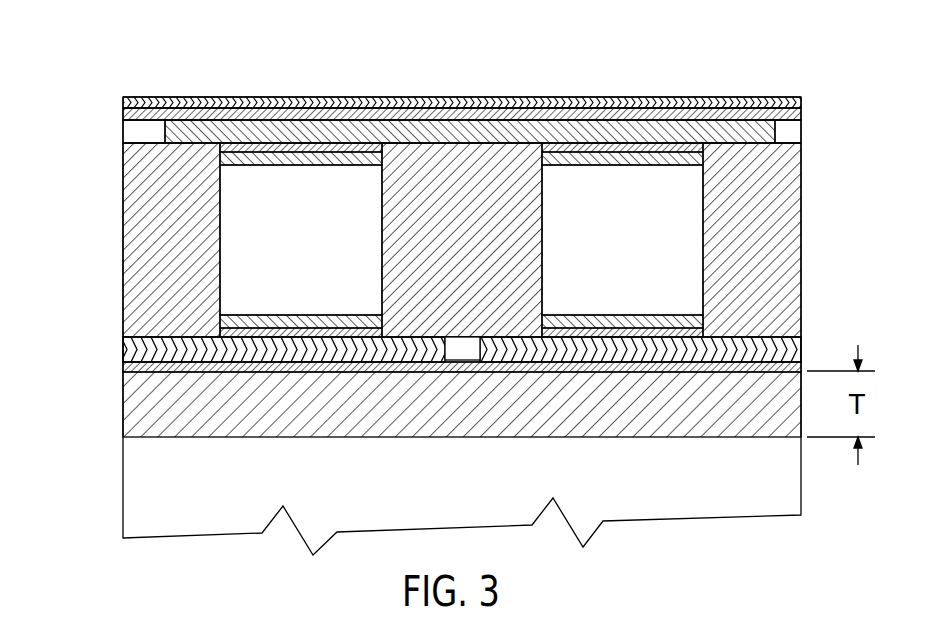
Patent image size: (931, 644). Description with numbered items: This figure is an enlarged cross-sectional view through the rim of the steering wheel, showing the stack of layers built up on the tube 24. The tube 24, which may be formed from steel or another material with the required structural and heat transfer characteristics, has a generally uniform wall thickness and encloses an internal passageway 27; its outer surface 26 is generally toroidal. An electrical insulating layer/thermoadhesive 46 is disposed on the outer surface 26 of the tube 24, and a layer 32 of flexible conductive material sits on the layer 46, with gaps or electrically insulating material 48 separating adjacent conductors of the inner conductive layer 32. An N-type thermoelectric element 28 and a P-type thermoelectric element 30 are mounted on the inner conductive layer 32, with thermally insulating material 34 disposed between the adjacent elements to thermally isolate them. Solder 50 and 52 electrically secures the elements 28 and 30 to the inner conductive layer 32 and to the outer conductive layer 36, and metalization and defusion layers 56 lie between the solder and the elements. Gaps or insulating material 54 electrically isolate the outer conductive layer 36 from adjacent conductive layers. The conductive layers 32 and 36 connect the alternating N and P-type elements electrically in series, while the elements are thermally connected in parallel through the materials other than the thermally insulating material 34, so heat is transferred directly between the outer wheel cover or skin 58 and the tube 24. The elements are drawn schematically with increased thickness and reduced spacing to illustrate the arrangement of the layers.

The tube 24 is at (123, 408).
The cylindrical outer surface 26 is at (140, 360).
The internal passageway 27 is at (590, 481).
The N-type thermoelectric element 28 is at (283, 240).
The P-type thermoelectric element 30 is at (603, 237).
The inner conductive layer 32 is at (143, 347).
The thermally insulating material 34 is at (135, 230).
The outer conductive layer 36 is at (200, 133).
The electrical insulating layer/thermoadhesive 46 is at (125, 365).
The gaps or electrically insulating material 48 is at (460, 352).
The solder 50 is at (222, 330).
The solder 52 is at (215, 148).
The gaps or insulating material 54 is at (128, 128).
The metalization and defusion layers 56 is at (248, 166).
The outer wheel cover or skin 58 is at (344, 97).